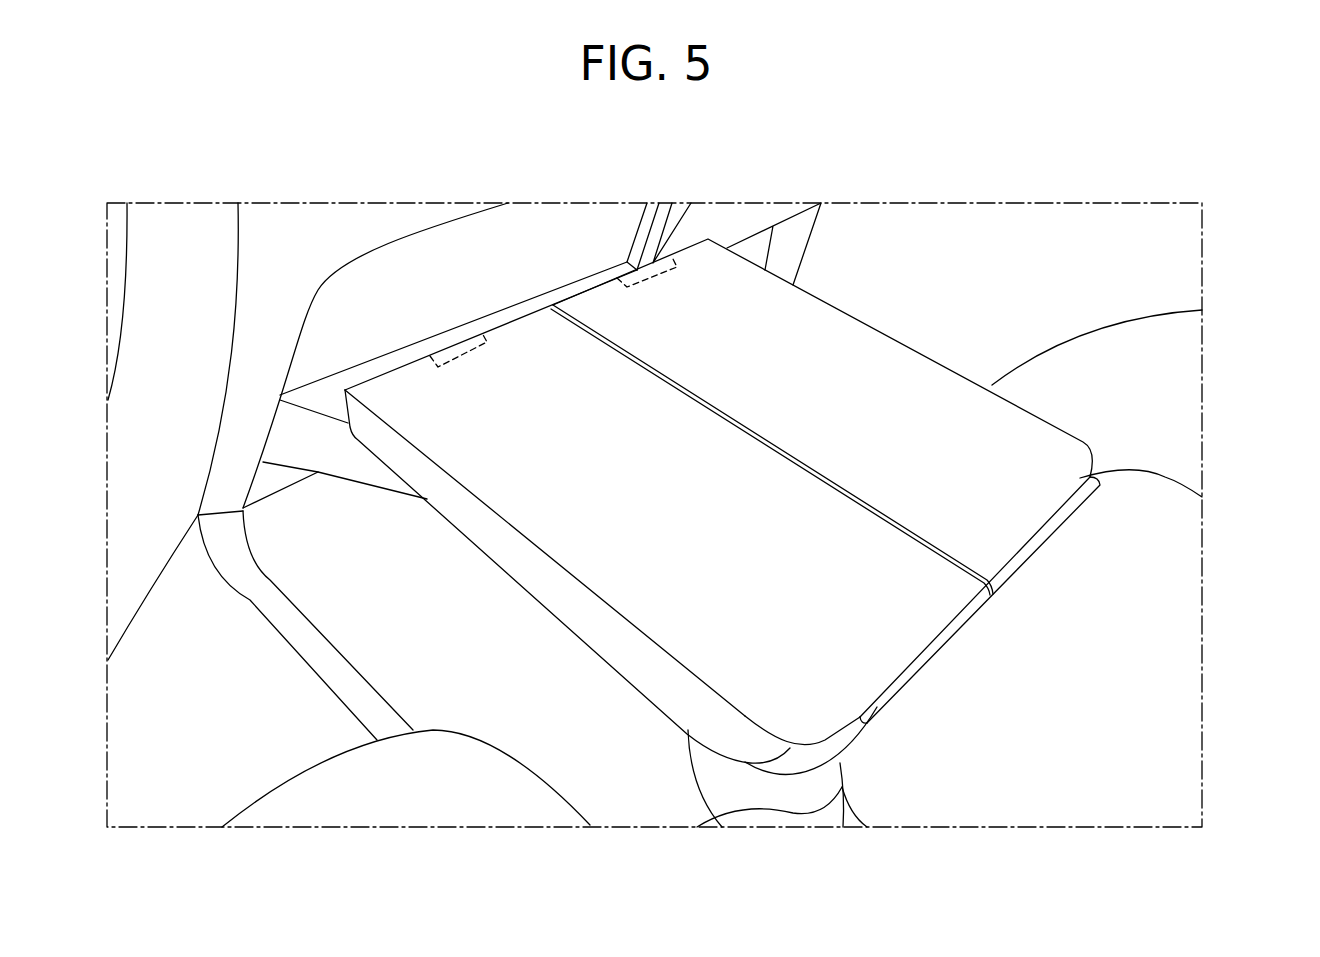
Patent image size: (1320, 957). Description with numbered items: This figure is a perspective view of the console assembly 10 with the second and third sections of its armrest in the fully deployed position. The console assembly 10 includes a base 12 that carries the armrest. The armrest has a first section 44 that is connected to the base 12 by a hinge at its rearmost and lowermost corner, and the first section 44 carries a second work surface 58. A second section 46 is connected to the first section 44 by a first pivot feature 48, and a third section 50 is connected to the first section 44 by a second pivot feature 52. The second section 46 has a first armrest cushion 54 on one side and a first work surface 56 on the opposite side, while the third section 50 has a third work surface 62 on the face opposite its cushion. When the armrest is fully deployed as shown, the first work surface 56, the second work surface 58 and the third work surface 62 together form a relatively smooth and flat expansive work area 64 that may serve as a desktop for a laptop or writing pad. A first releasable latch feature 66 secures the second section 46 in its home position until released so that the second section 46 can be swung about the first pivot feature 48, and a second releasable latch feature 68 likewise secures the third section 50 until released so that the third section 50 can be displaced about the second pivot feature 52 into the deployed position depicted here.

The console assembly 10 is at (215, 173).
The base 12 is at (747, 795).
The first section 44 is at (1165, 477).
The second section 46 is at (657, 673).
The first pivot feature 48 is at (930, 653).
The third section 50 is at (922, 345).
The second pivot feature 52 is at (1032, 545).
The first armrest cushion 54 is at (513, 580).
The first work surface 56 is at (658, 512).
The second work surface 58 is at (1088, 763).
The third work surface 62 is at (843, 418).
The work area 64 is at (1013, 340).
The first releasable latch feature 66 is at (452, 348).
The second releasable latch feature 68 is at (623, 267).